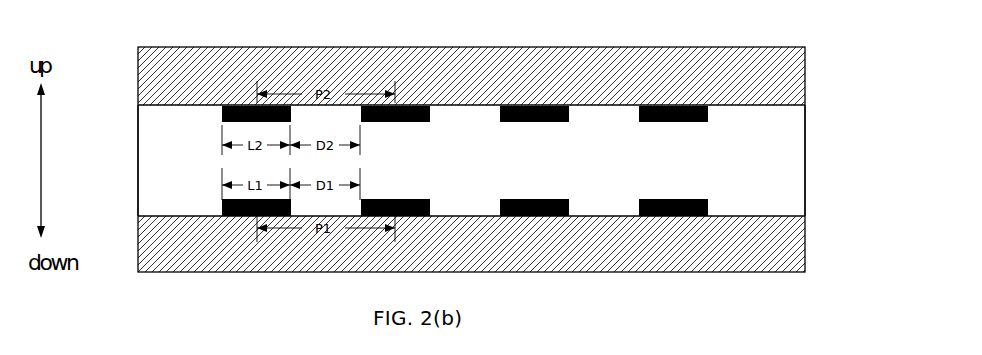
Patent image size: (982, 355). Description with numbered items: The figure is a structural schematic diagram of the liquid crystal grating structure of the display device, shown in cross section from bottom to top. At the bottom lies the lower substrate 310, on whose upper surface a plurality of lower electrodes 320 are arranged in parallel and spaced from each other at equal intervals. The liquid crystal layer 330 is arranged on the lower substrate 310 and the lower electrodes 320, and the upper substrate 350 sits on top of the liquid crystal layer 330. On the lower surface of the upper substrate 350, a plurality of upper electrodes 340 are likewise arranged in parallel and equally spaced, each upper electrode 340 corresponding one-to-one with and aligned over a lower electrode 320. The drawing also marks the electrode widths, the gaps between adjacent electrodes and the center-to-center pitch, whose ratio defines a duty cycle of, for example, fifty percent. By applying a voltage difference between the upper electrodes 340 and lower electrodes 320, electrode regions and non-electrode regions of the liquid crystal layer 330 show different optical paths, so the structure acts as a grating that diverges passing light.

The lower substrate 310 is at (778, 243).
The lower electrodes 320 is at (222, 207).
The liquid crystal layer 330 is at (778, 162).
The upper electrodes 340 is at (222, 114).
The upper substrate 350 is at (785, 77).